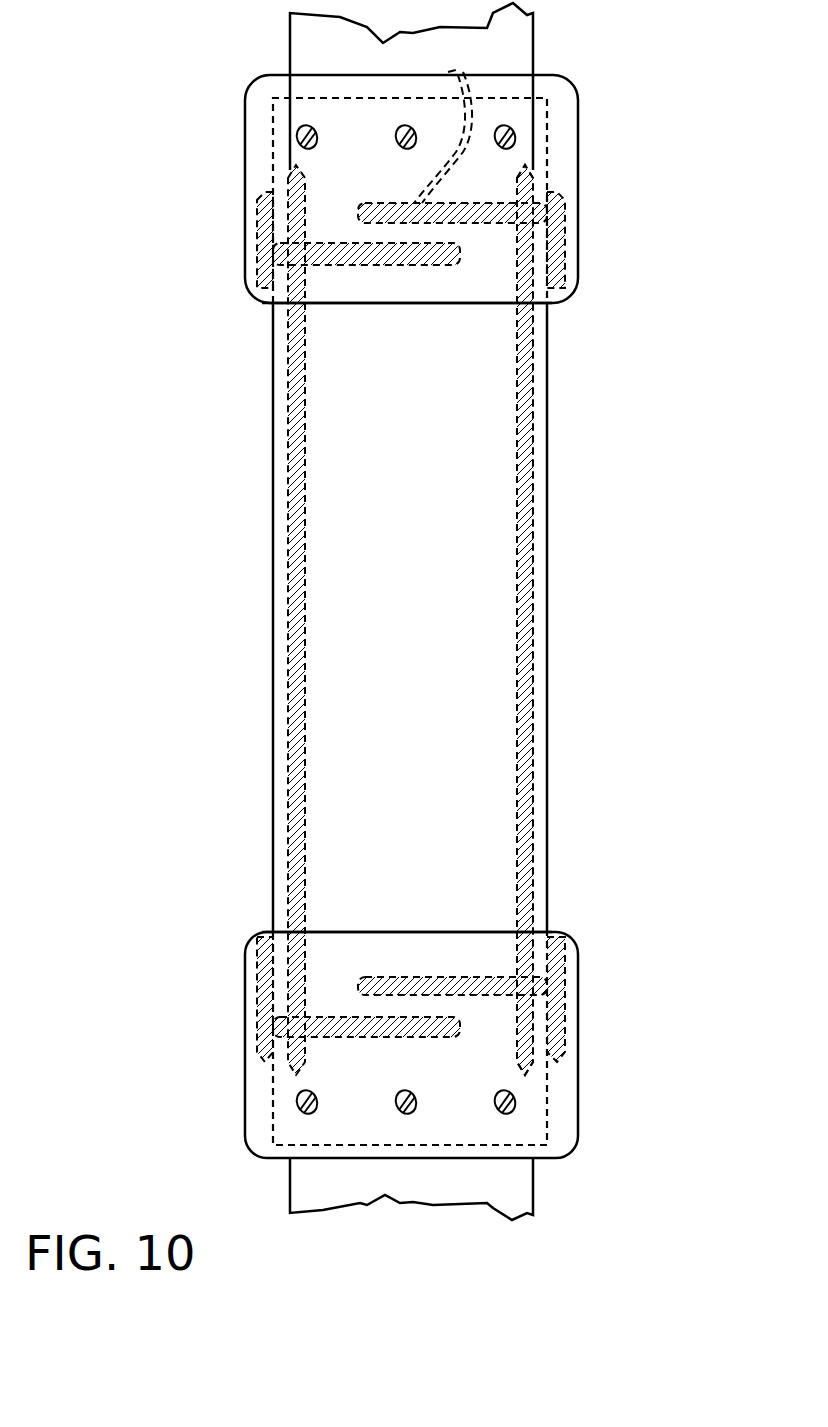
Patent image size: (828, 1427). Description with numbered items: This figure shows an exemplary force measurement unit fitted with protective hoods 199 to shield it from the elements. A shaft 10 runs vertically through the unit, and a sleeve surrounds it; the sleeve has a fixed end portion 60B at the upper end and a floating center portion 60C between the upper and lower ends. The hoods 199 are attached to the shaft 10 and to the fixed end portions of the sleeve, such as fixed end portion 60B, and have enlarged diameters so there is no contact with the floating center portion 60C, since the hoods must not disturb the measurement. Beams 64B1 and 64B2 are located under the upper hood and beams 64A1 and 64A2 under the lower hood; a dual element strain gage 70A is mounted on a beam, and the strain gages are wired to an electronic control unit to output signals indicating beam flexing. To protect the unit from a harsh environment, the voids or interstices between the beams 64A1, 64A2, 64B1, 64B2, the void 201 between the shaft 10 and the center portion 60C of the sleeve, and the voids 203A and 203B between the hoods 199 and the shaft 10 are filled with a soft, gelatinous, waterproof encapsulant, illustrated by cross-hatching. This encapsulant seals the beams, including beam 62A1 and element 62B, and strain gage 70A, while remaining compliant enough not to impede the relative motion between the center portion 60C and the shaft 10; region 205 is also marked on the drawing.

The shaft 10 is at (513, 44).
The protective hood 199 is at (565, 152).
The fixed end portion of sleeve 60B is at (263, 131).
The floating center portion of sleeve 60C is at (375, 550).
The void between shaft and center portion 201 is at (306, 469).
The right reinforcing bar 205 is at (520, 403).
The dual element strain gage 70A is at (383, 213).
The upper flange assembly 62B is at (445, 233).
The beam 64B1 is at (507, 213).
The beam 64B2 is at (453, 255).
The void between hood and shaft 203B is at (552, 303).
The beam 62A1 is at (411, 999).
The beam 64A1 is at (503, 987).
The beam 64A2 is at (453, 1025).
The void between hood and shaft 203A is at (263, 932).